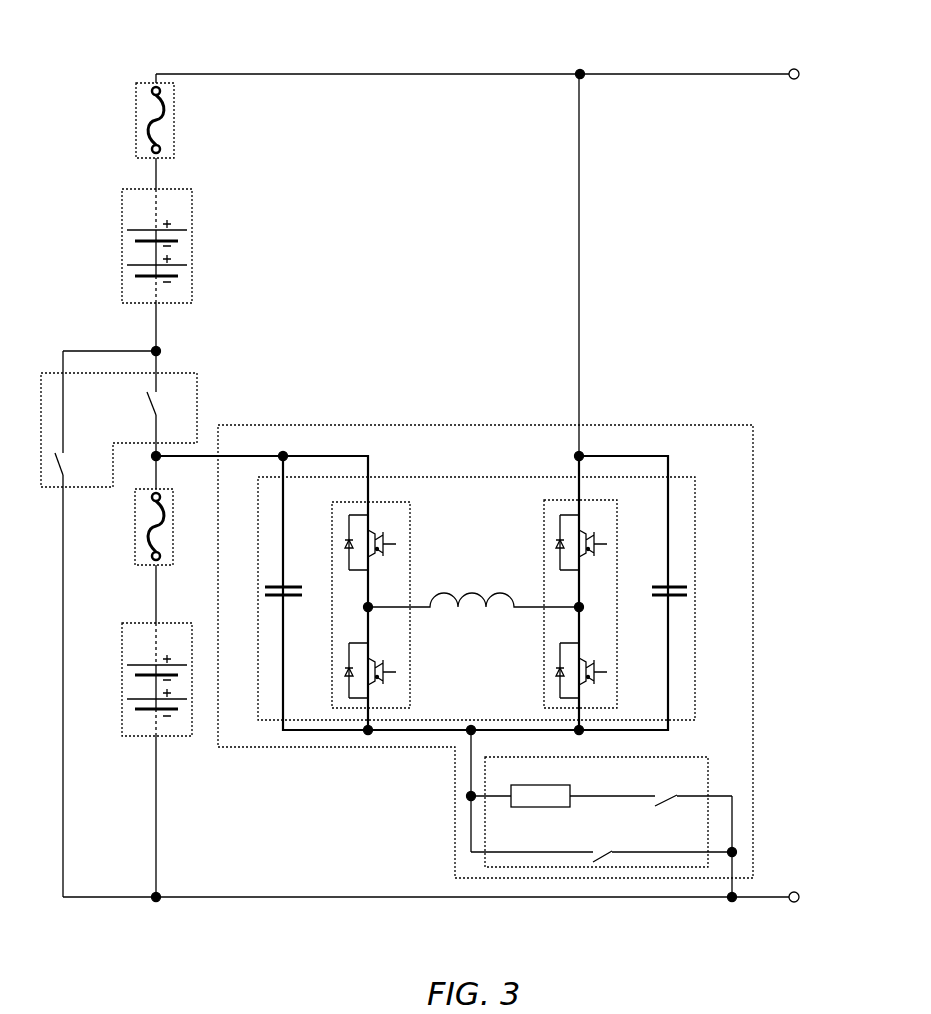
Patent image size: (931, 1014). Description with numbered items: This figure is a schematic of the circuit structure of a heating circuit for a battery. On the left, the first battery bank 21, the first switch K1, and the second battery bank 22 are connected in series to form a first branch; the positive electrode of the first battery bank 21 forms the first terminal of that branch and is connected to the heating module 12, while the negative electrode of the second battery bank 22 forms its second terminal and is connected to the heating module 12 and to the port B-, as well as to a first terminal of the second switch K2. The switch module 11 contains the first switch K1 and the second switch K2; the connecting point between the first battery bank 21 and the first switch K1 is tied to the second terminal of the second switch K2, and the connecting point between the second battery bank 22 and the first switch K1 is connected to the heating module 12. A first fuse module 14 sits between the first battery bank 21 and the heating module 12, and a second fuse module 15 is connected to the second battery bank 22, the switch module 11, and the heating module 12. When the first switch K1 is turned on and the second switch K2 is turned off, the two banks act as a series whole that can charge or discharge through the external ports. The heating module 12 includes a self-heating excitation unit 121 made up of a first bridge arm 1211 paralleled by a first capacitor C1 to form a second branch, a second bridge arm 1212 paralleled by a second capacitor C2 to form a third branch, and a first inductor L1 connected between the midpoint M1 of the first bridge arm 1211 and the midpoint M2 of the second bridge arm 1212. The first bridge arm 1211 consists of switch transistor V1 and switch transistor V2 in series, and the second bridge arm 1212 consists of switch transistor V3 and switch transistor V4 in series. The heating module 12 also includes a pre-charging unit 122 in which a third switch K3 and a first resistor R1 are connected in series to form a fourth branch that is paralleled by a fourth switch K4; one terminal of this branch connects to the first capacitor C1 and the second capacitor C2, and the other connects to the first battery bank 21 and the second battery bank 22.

The first fuse module 14 is at (174, 131).
The first battery bank 21 is at (176, 189).
The switch module 11 is at (129, 412).
The first switch K1 is at (167, 403).
The second switch K2 is at (76, 466).
The second fuse module 15 is at (173, 535).
The second battery bank 22 is at (162, 623).
The heating module 12 is at (470, 425).
The self-heating excitation unit 121 is at (462, 477).
The first bridge arm 1211 is at (410, 535).
The second bridge arm 1212 is at (614, 538).
The pre-charging unit 122 is at (690, 757).
The switch transistor V1 is at (372, 541).
The switch transistor V2 is at (372, 670).
The switch transistor V3 is at (584, 541).
The switch transistor V4 is at (584, 670).
The first capacitor C1 is at (298, 593).
The second capacitor C2 is at (654, 593).
The first inductor L1 is at (473, 587).
The midpoint of the first bridge arm M1 is at (357, 607).
The midpoint of the second bridge arm M2 is at (601, 607).
The first resistor R1 is at (563, 785).
The third switch K3 is at (693, 789).
The fourth switch K4 is at (601, 846).
The port B− B- is at (816, 897).